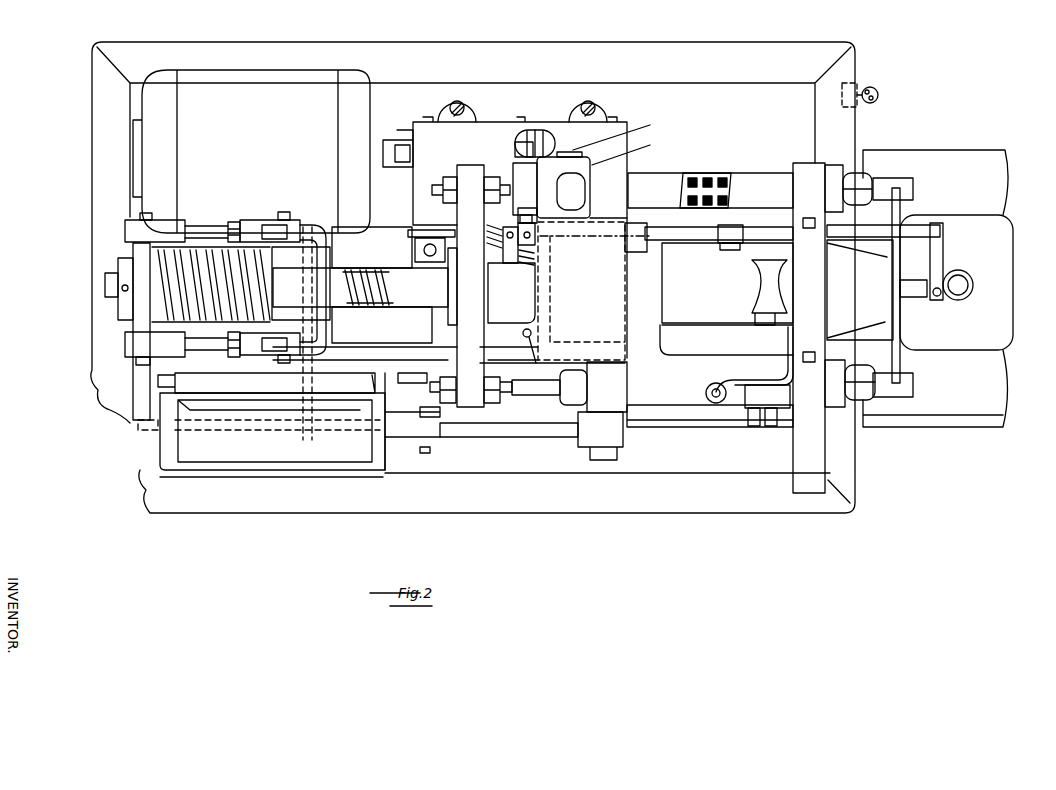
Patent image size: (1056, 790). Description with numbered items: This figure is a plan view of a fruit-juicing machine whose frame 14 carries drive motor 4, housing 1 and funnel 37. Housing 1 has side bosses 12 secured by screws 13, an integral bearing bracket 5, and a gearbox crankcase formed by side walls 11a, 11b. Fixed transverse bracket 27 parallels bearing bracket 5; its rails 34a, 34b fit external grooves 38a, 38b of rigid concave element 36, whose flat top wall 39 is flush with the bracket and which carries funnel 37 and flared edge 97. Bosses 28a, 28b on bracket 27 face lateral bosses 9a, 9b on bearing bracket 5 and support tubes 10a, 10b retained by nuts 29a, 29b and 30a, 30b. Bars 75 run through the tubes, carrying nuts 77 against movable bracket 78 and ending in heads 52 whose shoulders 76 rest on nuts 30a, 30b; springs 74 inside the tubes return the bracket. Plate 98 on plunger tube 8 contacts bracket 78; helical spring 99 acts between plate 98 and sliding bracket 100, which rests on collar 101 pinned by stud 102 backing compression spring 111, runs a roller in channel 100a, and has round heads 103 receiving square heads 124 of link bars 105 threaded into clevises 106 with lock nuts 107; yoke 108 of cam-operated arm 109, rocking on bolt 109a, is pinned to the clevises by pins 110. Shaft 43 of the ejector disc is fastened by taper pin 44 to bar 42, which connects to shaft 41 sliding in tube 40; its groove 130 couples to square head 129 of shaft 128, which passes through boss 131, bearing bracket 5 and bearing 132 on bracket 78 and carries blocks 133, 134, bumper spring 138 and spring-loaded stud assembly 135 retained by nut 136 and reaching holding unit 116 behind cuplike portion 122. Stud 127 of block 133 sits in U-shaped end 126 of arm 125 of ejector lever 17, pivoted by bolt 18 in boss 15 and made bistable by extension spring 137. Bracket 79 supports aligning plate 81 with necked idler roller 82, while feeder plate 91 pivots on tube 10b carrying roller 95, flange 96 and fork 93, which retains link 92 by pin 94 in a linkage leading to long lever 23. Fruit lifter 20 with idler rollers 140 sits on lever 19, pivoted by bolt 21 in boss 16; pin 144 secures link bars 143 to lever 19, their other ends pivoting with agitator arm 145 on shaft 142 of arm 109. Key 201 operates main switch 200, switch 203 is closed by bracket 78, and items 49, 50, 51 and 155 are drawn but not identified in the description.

The housing 1 is at (1040, 287).
The drive motor 4 is at (213, 75).
The bearing bracket 5 is at (623, 270).
The plunger tube 8 is at (405, 307).
The lateral boss 9a is at (630, 178).
The lateral boss 9b is at (627, 410).
The tube 10a is at (684, 175).
The tube 10b is at (673, 410).
The side wall 11a is at (375, 265).
The side wall 11b is at (493, 348).
The boss 12 is at (583, 97).
The screw 13 is at (594, 102).
The frame 14 is at (514, 53).
The boss 15 is at (563, 218).
The boss 16 is at (572, 412).
The ejector lever 17 is at (647, 143).
The bolt 18 is at (647, 122).
The lever 19 is at (513, 438).
The fruit lifter 20 is at (340, 480).
The bolt 21 is at (600, 462).
The long lever 23 is at (710, 427).
The fixed transverse bracket 27 is at (828, 457).
The boss 28a is at (838, 166).
The boss 28b is at (837, 412).
The nut 29a is at (582, 185).
The nut 29b is at (573, 387).
The nut 30a is at (857, 189).
The nut 30b is at (860, 382).
The rail 34a is at (811, 211).
The rail 34b is at (811, 373).
The rigid concave conical element 36 is at (860, 290).
The funnel 37 is at (1008, 352).
The external groove 38a is at (811, 263).
The external groove 38b is at (810, 352).
The upper outside wall 39 is at (810, 299).
The tube 40 is at (883, 242).
The shaft 41 is at (920, 222).
The bar 42 is at (987, 242).
The shaft 43 is at (945, 300).
The taper pin 44 is at (953, 300).
The shaft 49 is at (903, 360).
The pin 50 is at (925, 295).
The vertical rod 51 is at (910, 383).
The head 52 is at (898, 395).
The spring 74 is at (713, 176).
The bar 75 is at (525, 388).
The shoulder 76 is at (875, 397).
The nut 77 is at (445, 400).
The movable bracket 78 is at (458, 280).
The bracket 79 is at (662, 343).
The aligning plate 81 is at (727, 284).
The horizontal idler roller 82 is at (755, 280).
The feeder plate 91 is at (740, 377).
The link 92 is at (767, 396).
The fork 93 is at (760, 415).
The pin 94 is at (745, 426).
The vertical idler roller 95 is at (727, 407).
The flange 96 is at (785, 348).
The flared edge 97 is at (793, 400).
The circular plate 98 is at (273, 258).
The helical spring 99 is at (147, 330).
The sliding bracket 100 is at (132, 322).
The channel 100a is at (108, 278).
The collar 101 is at (125, 312).
The stud 102 is at (123, 290).
The round head 103 is at (150, 363).
The link bar 105 is at (200, 358).
The clevis 106 is at (264, 220).
The lock nut 107 is at (227, 335).
The yoke 108 is at (297, 347).
The cam-operated arm 109 is at (348, 347).
The bolt 109a is at (413, 385).
The pin 110 is at (280, 360).
The compression spring 111 is at (351, 268).
The holding unit 116 is at (650, 309).
The cuplike portion 122 is at (627, 345).
The bored square head 124 is at (158, 357).
The arm 125 is at (528, 189).
The U-shaped end 126 is at (521, 214).
The stud 127 is at (530, 205).
The shaft 128 is at (657, 230).
The square head 129 is at (727, 230).
The circumferential groove 130 is at (735, 247).
The boss 131 is at (630, 255).
The bearing 132 is at (470, 245).
The block 133 is at (538, 237).
The block 134 is at (510, 267).
The spring-loaded stud assembly 135 is at (535, 272).
The nut 136 is at (478, 303).
The extension spring 137 is at (535, 130).
The bumper spring 138 is at (487, 228).
The idler roller 140 is at (295, 392).
The shaft 142 is at (330, 368).
The link bar 143 is at (433, 425).
The pin 144 is at (432, 443).
The agitator arm 145 is at (150, 432).
The motor bracket 155 is at (400, 140).
The main switch 200 is at (858, 93).
The key 201 is at (880, 97).
The switch 203 is at (535, 337).